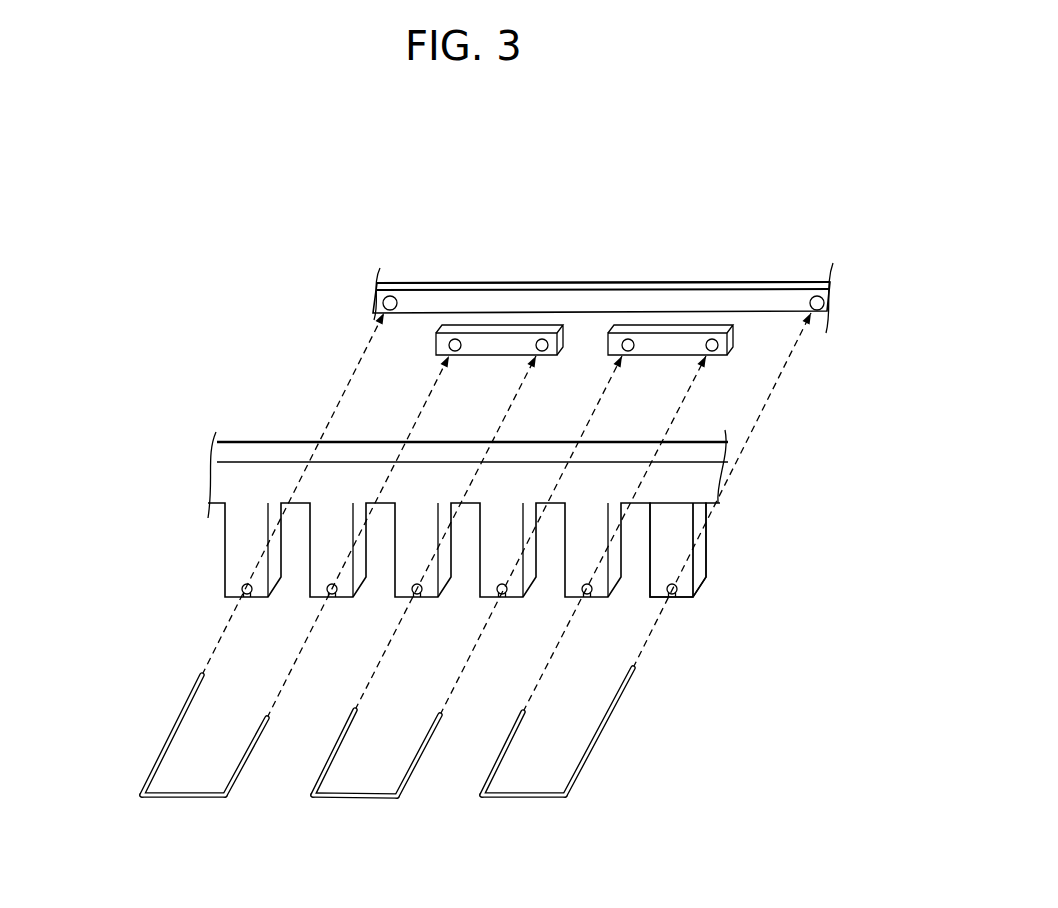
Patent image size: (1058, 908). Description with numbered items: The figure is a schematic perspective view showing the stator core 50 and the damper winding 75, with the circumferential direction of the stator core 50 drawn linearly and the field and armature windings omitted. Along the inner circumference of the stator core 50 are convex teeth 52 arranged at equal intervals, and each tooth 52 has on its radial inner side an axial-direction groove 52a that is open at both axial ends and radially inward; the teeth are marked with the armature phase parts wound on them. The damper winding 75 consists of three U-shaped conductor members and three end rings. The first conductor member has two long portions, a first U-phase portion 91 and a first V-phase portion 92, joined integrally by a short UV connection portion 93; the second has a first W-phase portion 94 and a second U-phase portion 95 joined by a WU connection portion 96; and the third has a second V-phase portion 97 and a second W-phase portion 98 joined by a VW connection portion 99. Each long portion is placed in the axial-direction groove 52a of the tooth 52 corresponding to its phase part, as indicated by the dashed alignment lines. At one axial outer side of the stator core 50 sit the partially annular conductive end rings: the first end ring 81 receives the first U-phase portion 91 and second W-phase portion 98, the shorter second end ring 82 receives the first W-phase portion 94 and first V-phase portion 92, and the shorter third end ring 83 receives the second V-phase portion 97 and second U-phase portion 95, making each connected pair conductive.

The first end ring 81 is at (438, 283).
The second end ring 82 is at (650, 348).
The third end ring 83 is at (474, 348).
The stator core 50 is at (284, 442).
The teeth 52 is at (714, 587).
The axial-direction grooves 52a is at (674, 598).
The damper winding 75 is at (429, 772).
The first U-phase portion 91 is at (580, 782).
The first V-phase portion 92 is at (497, 757).
The UV connection portion 93 is at (518, 800).
The first W-phase portion 94 is at (410, 782).
The second U-phase portion 95 is at (332, 757).
The WU connection portion 96 is at (353, 800).
The second V-phase portion 97 is at (235, 785).
The second W-phase portion 98 is at (158, 757).
The VW connection portion 99 is at (177, 800).